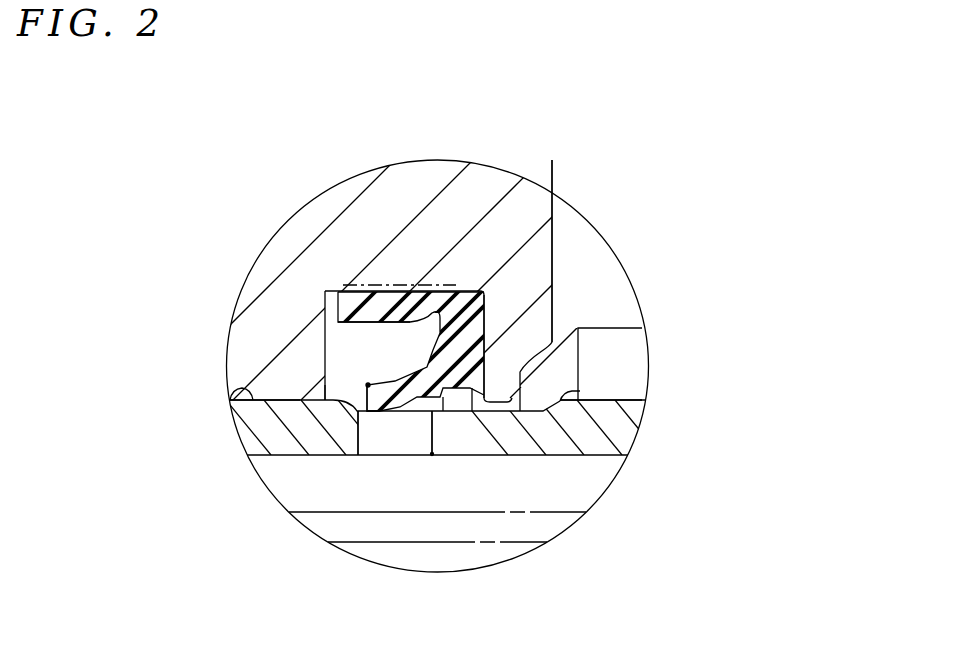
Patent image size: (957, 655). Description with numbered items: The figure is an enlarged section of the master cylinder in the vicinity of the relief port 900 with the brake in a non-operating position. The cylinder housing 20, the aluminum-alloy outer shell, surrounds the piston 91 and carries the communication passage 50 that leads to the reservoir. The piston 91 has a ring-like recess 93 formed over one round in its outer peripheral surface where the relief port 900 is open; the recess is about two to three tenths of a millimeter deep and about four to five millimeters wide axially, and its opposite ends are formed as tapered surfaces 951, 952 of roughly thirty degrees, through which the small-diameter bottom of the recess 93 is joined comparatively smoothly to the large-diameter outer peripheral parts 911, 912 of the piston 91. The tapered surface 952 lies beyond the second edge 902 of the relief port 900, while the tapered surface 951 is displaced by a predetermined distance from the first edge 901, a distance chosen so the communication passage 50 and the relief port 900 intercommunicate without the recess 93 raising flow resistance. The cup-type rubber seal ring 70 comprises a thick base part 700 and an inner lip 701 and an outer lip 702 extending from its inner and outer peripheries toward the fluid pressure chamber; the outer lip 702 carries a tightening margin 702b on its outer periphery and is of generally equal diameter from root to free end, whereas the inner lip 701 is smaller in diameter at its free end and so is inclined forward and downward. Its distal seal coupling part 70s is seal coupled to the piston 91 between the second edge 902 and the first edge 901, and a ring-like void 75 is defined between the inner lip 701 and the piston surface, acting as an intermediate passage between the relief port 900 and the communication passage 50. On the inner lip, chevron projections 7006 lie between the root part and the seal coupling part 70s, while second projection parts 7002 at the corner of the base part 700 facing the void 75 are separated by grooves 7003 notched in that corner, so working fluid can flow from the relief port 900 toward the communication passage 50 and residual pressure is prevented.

The cylinder housing 20 is at (300, 228).
The seal ring 70 is at (490, 320).
The base part 700 is at (458, 353).
The outer lip 702 is at (387, 313).
The tightening margin 702b is at (396, 258).
The chevron projection 7006 is at (438, 392).
The second projection part 7002 is at (470, 411).
The groove (flow passage) 7003 is at (483, 411).
The ring-like void 75 is at (505, 455).
The seal coupling part 70s is at (367, 412).
The inner lip 701 is at (432, 455).
The relief port 900 is at (363, 453).
The first edge 901 is at (405, 432).
The second edge 902 is at (362, 391).
The piston 91 is at (623, 430).
The outer peripheral part 911 is at (630, 398).
The outer peripheral part 912 is at (222, 390).
The tapered surface 951 is at (575, 392).
The tapered surface 952 is at (325, 383).
The ring-like recess 93 is at (556, 335).
The communication passage 50 is at (593, 277).